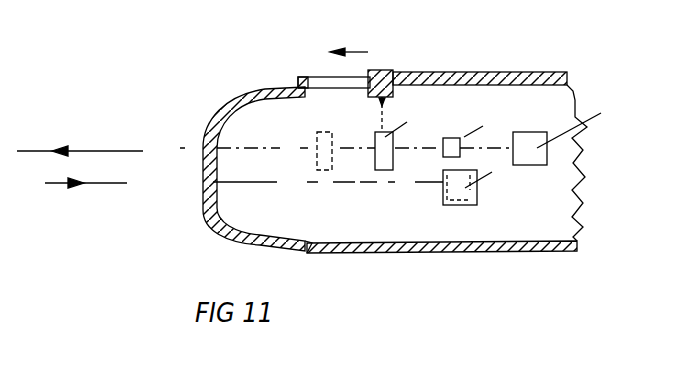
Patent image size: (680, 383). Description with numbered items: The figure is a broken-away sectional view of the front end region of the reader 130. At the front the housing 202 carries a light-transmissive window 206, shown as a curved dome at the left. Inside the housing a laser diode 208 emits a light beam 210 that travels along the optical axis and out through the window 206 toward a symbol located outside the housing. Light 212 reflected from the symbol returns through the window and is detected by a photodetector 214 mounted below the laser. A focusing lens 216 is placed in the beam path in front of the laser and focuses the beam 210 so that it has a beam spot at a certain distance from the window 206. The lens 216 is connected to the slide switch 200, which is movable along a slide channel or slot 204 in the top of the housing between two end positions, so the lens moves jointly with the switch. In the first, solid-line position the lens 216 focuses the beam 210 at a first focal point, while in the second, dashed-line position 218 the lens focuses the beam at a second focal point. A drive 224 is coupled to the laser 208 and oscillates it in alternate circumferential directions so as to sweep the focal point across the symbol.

The reader 130 is at (580, 59).
The slide switch 200 is at (380, 70).
The housing 202 is at (488, 72).
The slide channel 204 is at (322, 77).
The light-transmissive window 206 is at (203, 160).
The laser diode 208 is at (452, 138).
The light beam 210 is at (96, 145).
The reflected light 212 is at (103, 185).
The photodetector 214 is at (473, 203).
The focusing lens 216 is at (375, 132).
The dashed line position 218 is at (318, 132).
The drive 224 is at (538, 153).